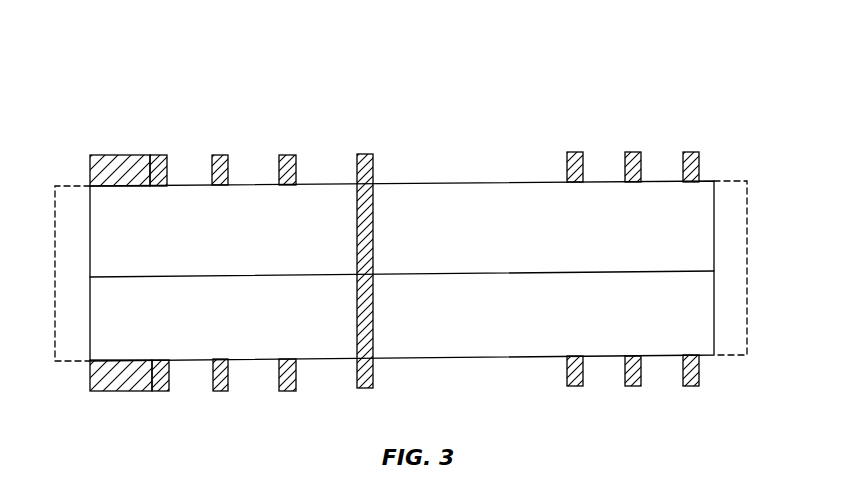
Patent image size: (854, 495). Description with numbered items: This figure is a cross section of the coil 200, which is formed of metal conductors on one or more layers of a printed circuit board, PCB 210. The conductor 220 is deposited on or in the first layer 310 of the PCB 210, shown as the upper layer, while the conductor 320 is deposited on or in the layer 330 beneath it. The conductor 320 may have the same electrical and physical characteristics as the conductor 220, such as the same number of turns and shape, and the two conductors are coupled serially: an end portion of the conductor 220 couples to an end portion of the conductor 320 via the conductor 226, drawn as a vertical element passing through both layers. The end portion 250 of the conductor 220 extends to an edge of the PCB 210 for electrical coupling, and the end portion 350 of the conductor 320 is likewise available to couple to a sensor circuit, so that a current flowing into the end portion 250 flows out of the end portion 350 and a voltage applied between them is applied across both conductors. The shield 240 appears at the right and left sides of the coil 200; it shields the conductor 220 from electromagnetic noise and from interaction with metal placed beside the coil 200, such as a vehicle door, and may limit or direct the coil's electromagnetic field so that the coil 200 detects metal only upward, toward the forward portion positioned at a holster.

The coil 200 is at (87, 58).
The printed circuit board 210 is at (486, 112).
The conductor 220 is at (158, 153).
The conductor 226 is at (374, 223).
The shield 240 is at (74, 365).
The end portion 250 is at (103, 153).
The first layer 310 is at (471, 253).
The conductor 320 is at (165, 393).
The layer 330 is at (447, 333).
The end portion 350 is at (108, 393).